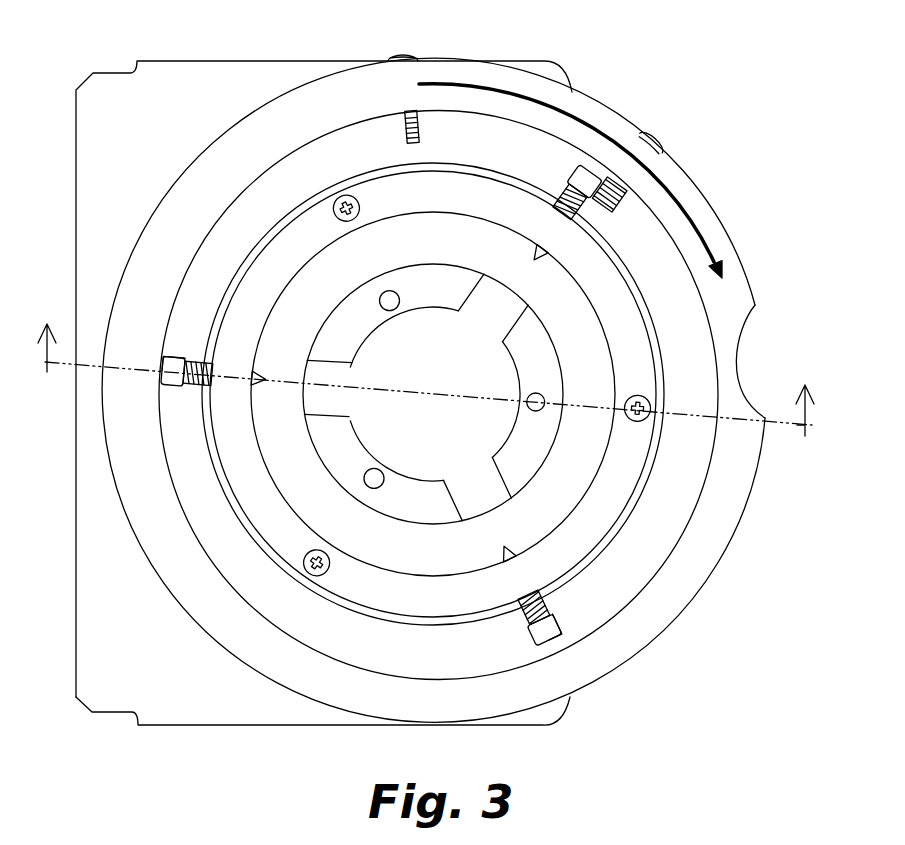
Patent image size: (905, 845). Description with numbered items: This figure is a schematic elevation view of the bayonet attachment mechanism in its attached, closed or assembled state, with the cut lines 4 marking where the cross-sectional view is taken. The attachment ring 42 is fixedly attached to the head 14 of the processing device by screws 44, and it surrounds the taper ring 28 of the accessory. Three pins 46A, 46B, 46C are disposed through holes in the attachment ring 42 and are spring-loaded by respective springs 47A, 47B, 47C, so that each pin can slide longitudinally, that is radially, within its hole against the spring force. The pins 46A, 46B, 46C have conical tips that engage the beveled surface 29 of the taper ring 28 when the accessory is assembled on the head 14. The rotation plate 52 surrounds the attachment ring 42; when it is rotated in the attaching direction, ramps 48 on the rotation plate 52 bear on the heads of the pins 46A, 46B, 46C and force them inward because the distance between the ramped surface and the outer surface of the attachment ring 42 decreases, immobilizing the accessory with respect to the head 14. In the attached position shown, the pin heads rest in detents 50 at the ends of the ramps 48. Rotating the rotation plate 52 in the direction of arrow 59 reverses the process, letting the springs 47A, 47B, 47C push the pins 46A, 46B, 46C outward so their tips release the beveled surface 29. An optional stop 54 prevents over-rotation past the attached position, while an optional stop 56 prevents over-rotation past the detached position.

The head 14 is at (77, 551).
The taper ring 28 is at (305, 258).
The beveled surface 29 is at (327, 314).
The attachment ring 42 is at (316, 200).
The screws 44 is at (356, 218).
The pin 46A is at (173, 390).
The pin 46B is at (468, 135).
The pin 46C is at (522, 633).
The spring 47A is at (187, 360).
The spring 47B is at (588, 210).
The spring 47C is at (522, 596).
The ramps 48 is at (487, 118).
The detents 50 is at (165, 365).
The rotation plate 52 is at (700, 598).
The stop 54 is at (657, 141).
The stop 56 is at (405, 52).
The arrow 59 is at (592, 88).
The cut lines 4 is at (428, 367).